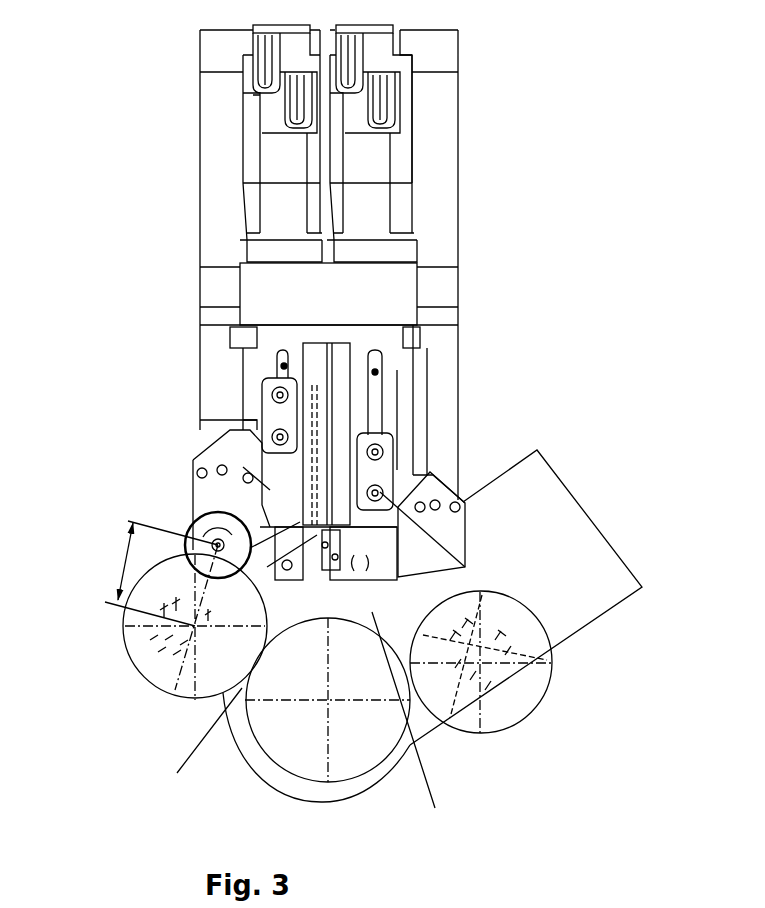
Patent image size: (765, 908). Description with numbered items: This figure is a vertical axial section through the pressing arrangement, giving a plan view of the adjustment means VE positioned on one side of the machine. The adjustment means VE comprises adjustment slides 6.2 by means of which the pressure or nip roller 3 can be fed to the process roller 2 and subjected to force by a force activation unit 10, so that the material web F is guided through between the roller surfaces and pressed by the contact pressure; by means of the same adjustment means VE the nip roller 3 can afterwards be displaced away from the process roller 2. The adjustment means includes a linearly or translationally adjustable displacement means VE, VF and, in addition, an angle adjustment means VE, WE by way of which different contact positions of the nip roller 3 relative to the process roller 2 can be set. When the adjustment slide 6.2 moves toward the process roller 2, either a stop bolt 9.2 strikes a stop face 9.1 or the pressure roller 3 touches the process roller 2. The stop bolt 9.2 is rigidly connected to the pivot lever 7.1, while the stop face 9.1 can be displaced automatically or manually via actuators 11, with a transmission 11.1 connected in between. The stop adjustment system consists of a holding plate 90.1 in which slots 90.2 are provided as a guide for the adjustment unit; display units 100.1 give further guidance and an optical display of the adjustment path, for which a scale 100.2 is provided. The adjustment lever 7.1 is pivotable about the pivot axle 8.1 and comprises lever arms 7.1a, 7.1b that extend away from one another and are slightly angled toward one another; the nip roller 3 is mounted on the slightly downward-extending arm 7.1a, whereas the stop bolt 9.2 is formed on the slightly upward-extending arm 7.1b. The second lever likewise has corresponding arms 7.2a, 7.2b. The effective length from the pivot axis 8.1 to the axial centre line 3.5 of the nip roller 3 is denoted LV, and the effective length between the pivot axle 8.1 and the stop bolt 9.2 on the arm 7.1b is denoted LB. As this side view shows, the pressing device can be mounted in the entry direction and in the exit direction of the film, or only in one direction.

The force activation unit 10 is at (409, 250).
The actuators 11 is at (457, 143).
The transmission 11.1 is at (458, 276).
The holding plate 90.1 is at (225, 347).
The slots 90.2 is at (349, 373).
The display units 100.1 is at (207, 444).
The scale 100.2 is at (209, 435).
The adjustment slides 6.2 is at (432, 402).
The adjustment lever 7.1 is at (338, 511).
The lever arm 7.1a is at (149, 622).
The lever arm 7.1b is at (338, 444).
The pivot axle 8.1 is at (146, 527).
The stop face 9.1 is at (536, 479).
The stop bolt 9.2 is at (457, 451).
The lever arm 7.2a is at (394, 663).
The lever arm 7.2b is at (530, 525).
The pressure or nip roller 3 is at (530, 515).
The axial centre line 3.5 is at (394, 658).
The process roller 2 is at (459, 720).
The material web F is at (398, 656).
The effective length LB is at (224, 498).
The effective length LV is at (152, 573).
The feed direction VE, VF is at (556, 265).
The swivel direction VE, WE is at (161, 493).